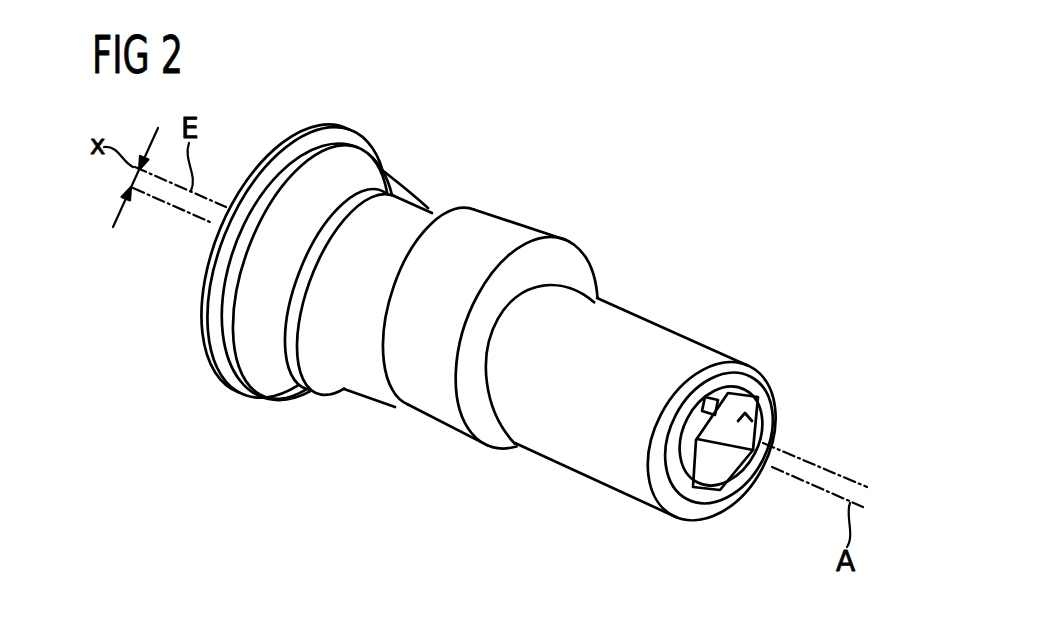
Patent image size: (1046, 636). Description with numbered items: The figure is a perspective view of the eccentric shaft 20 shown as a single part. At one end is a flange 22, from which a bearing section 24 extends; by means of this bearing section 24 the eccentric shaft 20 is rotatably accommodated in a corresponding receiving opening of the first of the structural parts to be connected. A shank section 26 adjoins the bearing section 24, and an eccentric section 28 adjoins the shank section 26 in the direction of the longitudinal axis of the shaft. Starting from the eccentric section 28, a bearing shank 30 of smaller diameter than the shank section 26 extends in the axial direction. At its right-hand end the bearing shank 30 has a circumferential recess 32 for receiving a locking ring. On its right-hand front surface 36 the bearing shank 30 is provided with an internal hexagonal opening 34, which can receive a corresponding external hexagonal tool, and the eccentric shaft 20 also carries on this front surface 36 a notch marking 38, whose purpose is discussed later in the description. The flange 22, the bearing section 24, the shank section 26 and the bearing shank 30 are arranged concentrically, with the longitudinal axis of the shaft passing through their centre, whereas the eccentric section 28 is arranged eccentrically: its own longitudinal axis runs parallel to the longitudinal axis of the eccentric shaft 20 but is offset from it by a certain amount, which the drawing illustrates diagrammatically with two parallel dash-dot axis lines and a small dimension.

The eccentric shaft 20 is at (674, 296).
The flange 22 is at (371, 148).
The bearing section 24 is at (268, 362).
The shank section 26 is at (435, 226).
The eccentric section 28 is at (522, 231).
The bearing shank 30 is at (575, 457).
The circumferential recess 32 is at (720, 363).
The internal hexagonal opening 34 is at (763, 422).
The front surface 36 is at (710, 503).
The notch marking 38 is at (708, 402).